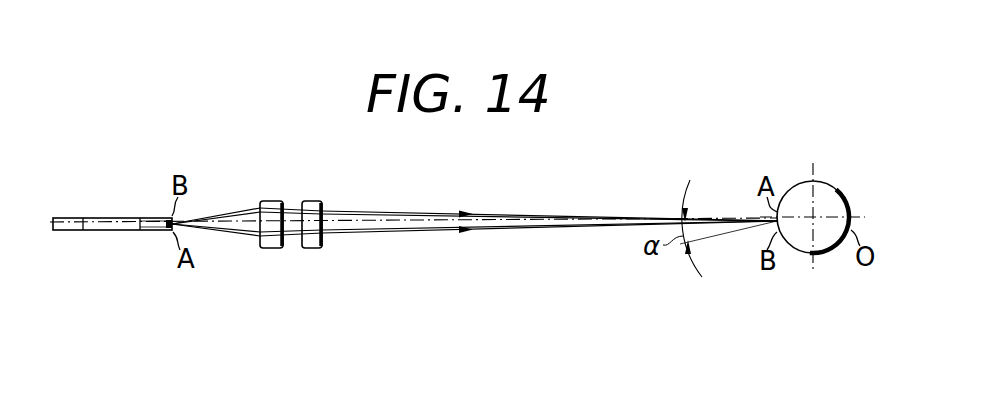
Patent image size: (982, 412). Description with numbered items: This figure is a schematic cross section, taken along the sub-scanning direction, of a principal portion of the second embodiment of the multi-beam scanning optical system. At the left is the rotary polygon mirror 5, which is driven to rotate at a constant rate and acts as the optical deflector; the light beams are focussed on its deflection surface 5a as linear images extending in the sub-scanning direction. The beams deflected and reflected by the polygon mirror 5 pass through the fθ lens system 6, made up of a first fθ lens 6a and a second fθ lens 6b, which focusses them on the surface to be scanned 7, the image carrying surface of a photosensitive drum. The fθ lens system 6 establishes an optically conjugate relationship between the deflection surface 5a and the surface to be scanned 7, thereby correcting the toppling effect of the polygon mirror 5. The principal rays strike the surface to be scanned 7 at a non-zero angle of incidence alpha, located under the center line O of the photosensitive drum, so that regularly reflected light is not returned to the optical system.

The polygon mirror 5 is at (105, 216).
The deflection surface 5a is at (152, 232).
The fθ lens system 6 is at (304, 268).
The first fθ lens 6a is at (270, 250).
The second fθ lens 6b is at (325, 249).
The surface to be scanned 7 is at (838, 190).